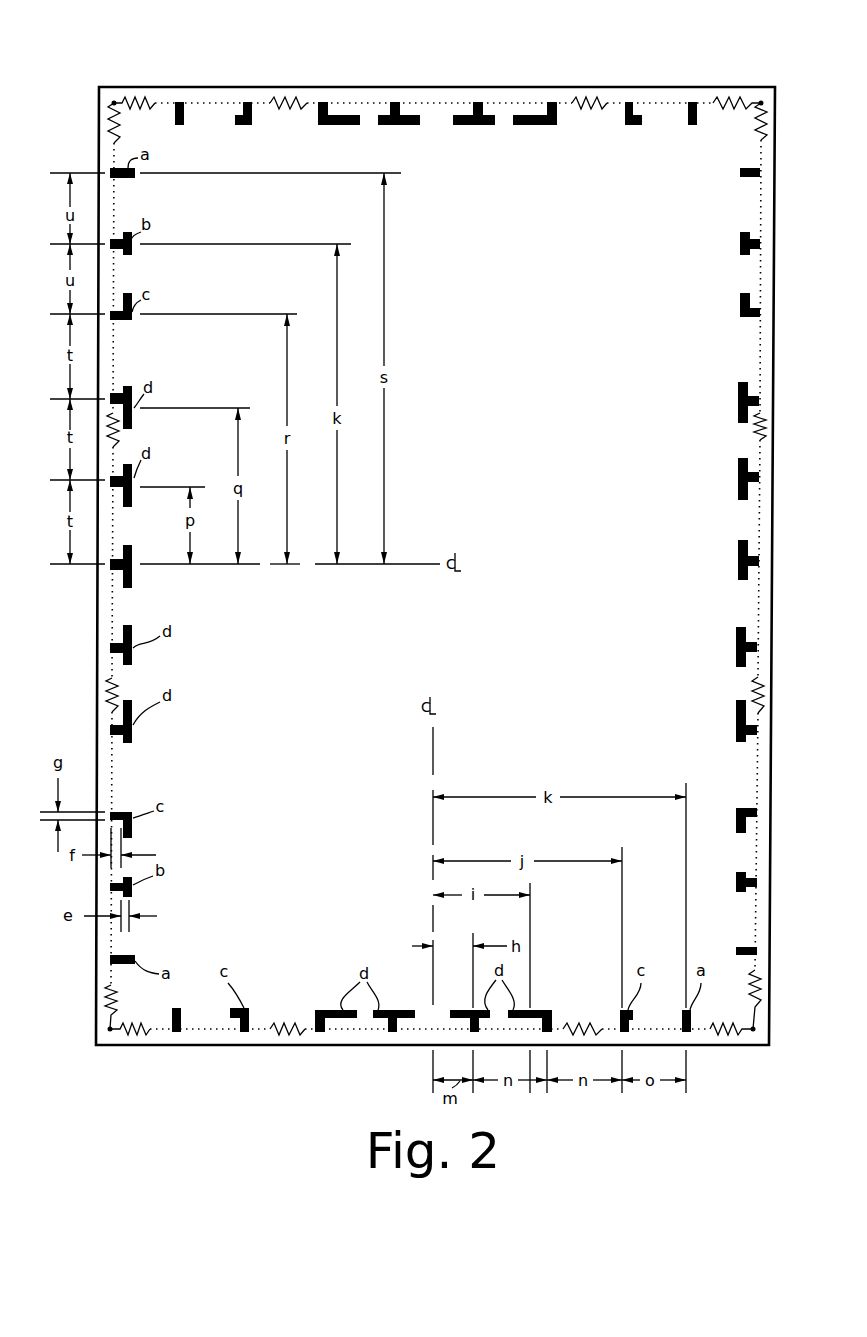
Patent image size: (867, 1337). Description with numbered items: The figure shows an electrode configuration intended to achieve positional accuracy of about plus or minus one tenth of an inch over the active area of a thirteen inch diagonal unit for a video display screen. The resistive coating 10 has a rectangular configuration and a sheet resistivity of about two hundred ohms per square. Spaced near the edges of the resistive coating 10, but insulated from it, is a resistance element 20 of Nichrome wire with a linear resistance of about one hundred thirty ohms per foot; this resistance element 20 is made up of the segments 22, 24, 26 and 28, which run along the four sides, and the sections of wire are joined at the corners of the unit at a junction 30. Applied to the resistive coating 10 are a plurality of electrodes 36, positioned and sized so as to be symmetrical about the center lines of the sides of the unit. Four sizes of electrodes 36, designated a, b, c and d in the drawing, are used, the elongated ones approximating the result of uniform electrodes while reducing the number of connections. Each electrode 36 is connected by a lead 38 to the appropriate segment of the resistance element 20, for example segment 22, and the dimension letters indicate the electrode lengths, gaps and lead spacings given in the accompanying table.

The resistive coating 10 is at (564, 371).
The resistance element 20 is at (586, 92).
The segment of resistance element 22 is at (113, 128).
The segment of resistance element 24 is at (136, 1036).
The segment of resistance element 26 is at (763, 128).
The segment of resistance element 28 is at (141, 102).
The junction 30 is at (761, 102).
The electrodes 36 is at (124, 660).
The lead 38 is at (124, 629).